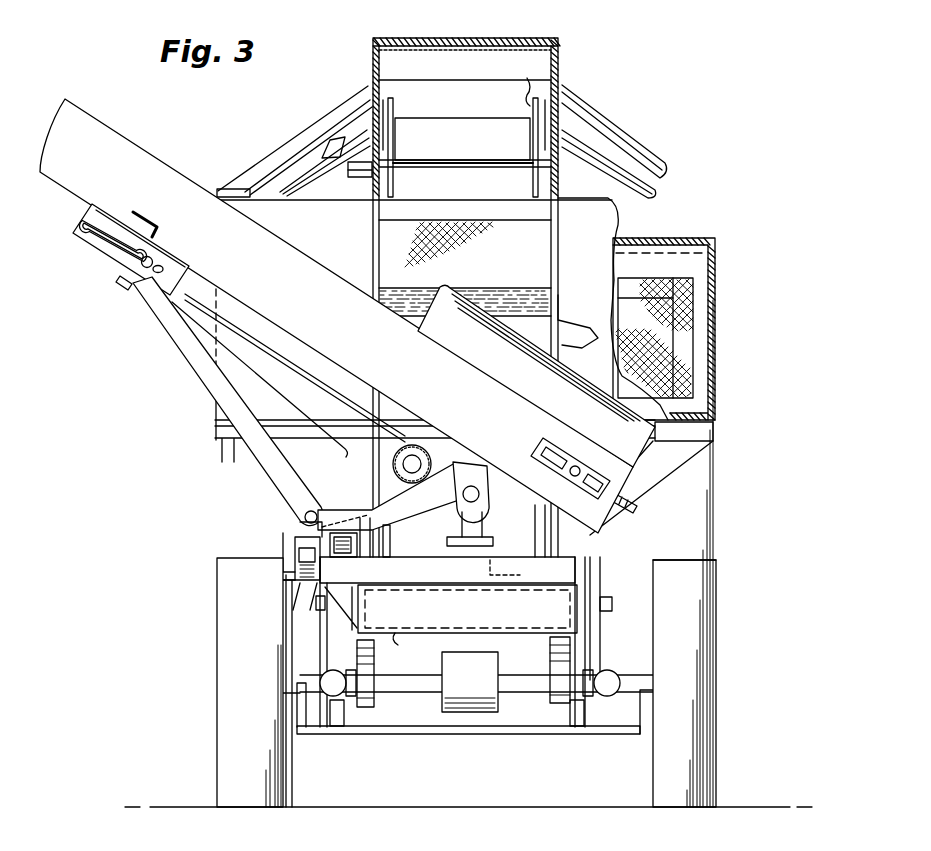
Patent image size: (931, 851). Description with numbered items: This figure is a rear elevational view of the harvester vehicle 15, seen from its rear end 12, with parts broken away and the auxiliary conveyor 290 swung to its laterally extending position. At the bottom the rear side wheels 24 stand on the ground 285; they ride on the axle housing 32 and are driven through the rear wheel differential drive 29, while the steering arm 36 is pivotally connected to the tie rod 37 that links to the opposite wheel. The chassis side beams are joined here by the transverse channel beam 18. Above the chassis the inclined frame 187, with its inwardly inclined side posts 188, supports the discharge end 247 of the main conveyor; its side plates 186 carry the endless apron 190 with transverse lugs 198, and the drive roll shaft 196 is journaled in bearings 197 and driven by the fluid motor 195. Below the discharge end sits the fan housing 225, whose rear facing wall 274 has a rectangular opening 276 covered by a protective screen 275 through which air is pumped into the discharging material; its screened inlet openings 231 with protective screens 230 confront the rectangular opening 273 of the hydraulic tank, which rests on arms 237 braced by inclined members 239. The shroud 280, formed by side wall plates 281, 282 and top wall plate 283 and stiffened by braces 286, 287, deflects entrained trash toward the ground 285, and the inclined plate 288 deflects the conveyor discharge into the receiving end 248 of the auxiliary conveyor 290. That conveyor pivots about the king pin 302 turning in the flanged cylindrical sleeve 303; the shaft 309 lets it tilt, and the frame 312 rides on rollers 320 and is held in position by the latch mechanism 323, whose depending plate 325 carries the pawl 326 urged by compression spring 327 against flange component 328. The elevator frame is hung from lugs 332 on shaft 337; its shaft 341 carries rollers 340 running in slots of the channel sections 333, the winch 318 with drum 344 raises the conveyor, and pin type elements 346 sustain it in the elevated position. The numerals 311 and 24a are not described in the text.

The top wall plate 283 is at (423, 37).
The shroud 280 is at (485, 36).
The side wall plate 281 is at (560, 40).
The side wall plate 282 is at (373, 52).
The brace 287 is at (347, 102).
The brace 286 is at (320, 153).
The discharge end 247 is at (528, 84).
The side plates 186 is at (392, 118).
The lugs 198 is at (440, 119).
The bearings 197 is at (535, 146).
The shaft 196 is at (412, 170).
The rectangular opening 276 is at (440, 224).
The fluid motor 195 is at (362, 181).
The rear facing wall 274 is at (573, 207).
The endless apron 190 is at (392, 206).
The protective screen 275 is at (466, 226).
The inclined plate 288 is at (347, 316).
The auxiliary conveyor 290 is at (130, 148).
The pin type element 346 is at (142, 222).
The rollers 340 is at (165, 252).
The drum 344 is at (98, 250).
The channel sections 333 is at (108, 278).
The shaft 341 is at (132, 290).
The housing 225 is at (712, 272).
The protective screens 230 is at (695, 300).
The rectangular openings 231 is at (690, 325).
The rectangular opening 273 is at (662, 350).
The arms 237 is at (713, 433).
The inclined members 239 is at (688, 462).
The receiving end 248 is at (640, 468).
The winch 318 is at (425, 445).
The shaft 309 is at (480, 466).
The chute mounting bracket 311 is at (520, 480).
The lugs 332 is at (328, 483).
The frame 312 is at (372, 512).
The shaft 337 is at (304, 516).
The depending plate 325 is at (300, 530).
The latch mechanism 323 is at (280, 548).
The pawl 326 is at (295, 578).
The compression spring 327 is at (300, 595).
The flange component 328 is at (302, 600).
The rollers 320 is at (344, 566).
The king pin 302 is at (447, 572).
The flanged cylindrical sleeve 303 is at (514, 573).
The side posts 188 is at (390, 542).
The inclined frame 187 is at (518, 546).
The vehicle 15 is at (688, 560).
The rear side wheels 24 is at (217, 652).
The bearing 24a is at (357, 648).
The transverse channel beam 18 is at (405, 635).
The rear end 12 is at (512, 633).
The rear wheel differential drive 29 is at (486, 684).
The axle housing 32 is at (400, 692).
The arm 36 is at (297, 722).
The tie rod 37 is at (360, 735).
The ground 285 is at (502, 807).